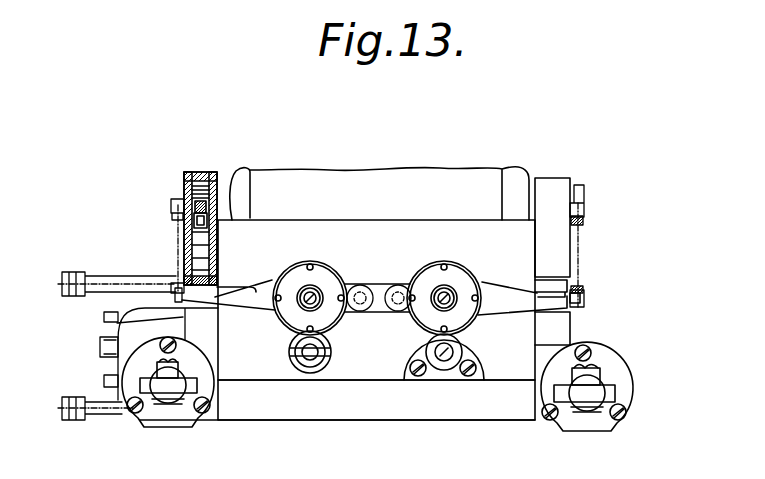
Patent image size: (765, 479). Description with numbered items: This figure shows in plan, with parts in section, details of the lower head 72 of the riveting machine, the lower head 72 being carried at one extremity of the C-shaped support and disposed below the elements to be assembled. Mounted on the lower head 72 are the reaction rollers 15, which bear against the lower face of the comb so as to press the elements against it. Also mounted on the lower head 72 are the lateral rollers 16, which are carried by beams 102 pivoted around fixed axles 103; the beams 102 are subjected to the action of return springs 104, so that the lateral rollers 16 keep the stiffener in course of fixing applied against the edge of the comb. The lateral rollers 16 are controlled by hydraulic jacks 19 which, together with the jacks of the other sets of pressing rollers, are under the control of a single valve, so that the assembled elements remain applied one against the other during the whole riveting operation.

The hydraulic jack 19 is at (200, 237).
The return spring 104 is at (170, 287).
The lateral roller 16 is at (304, 266).
The fixed axle 103 is at (398, 287).
The beam 102 is at (493, 290).
The reaction roller 15 is at (188, 387).
The lower head 72 is at (278, 405).